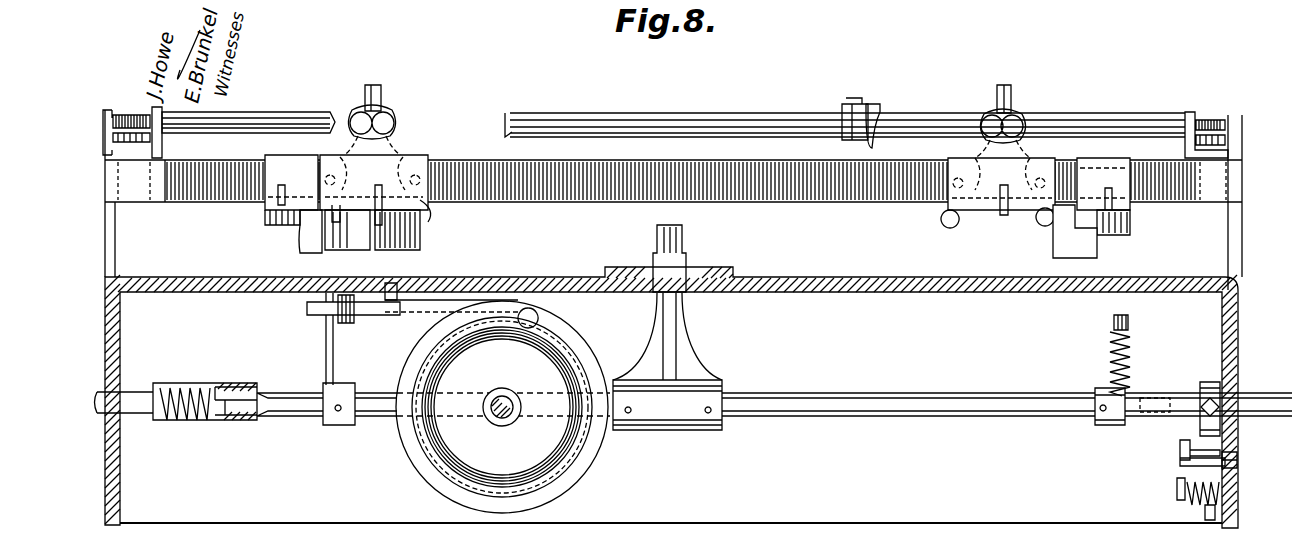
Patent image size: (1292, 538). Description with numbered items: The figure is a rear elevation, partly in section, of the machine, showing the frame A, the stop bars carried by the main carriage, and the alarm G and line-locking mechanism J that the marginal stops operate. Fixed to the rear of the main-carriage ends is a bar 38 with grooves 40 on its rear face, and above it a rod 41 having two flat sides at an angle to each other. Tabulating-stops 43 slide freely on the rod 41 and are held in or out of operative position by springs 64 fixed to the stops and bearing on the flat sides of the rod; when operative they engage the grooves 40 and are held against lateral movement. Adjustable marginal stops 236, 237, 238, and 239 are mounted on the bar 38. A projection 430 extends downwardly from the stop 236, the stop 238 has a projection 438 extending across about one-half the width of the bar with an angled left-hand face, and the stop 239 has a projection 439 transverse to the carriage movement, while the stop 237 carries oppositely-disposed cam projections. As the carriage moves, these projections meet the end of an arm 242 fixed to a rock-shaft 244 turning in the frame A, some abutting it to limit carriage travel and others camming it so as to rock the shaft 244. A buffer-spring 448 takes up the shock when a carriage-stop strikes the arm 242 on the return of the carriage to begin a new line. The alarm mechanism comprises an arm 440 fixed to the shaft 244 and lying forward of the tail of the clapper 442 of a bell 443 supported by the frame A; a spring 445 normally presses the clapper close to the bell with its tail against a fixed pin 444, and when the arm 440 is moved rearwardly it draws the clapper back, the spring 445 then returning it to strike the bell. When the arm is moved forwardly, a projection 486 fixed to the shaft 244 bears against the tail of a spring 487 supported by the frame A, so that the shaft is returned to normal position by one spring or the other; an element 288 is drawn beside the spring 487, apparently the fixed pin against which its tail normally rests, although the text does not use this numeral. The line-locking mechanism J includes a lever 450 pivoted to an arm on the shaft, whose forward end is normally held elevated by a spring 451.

The bar 38 is at (752, 202).
The grooves 40 is at (194, 201).
The bar 41 is at (615, 108).
The tabulating-stops 43 is at (843, 108).
The springs 64 is at (872, 116).
The marginal stop 236 is at (265, 157).
The marginal stop 237 is at (393, 152).
The marginal stop 238 is at (1022, 120).
The marginal stop 239 is at (1130, 164).
The arm 242 is at (693, 352).
The rock-shaft 244 is at (866, 416).
The stop piece 288 is at (1238, 466).
The projection 430 is at (300, 246).
The projection 438 is at (1045, 230).
The projection 439 is at (1097, 250).
The arm 440 is at (326, 352).
The clapper 442 is at (307, 307).
The bell 443 is at (583, 464).
The fixed pin 444 is at (345, 325).
The spring 445 is at (394, 292).
The buffer-spring 448 is at (192, 380).
The lever 450 is at (1147, 321).
The spring 451 is at (1145, 364).
The projection 486 is at (1180, 447).
The spring 487 is at (1180, 470).
The frame A is at (672, 317).
The alarm G is at (445, 420).
The line-locking mechanism J is at (1103, 385).